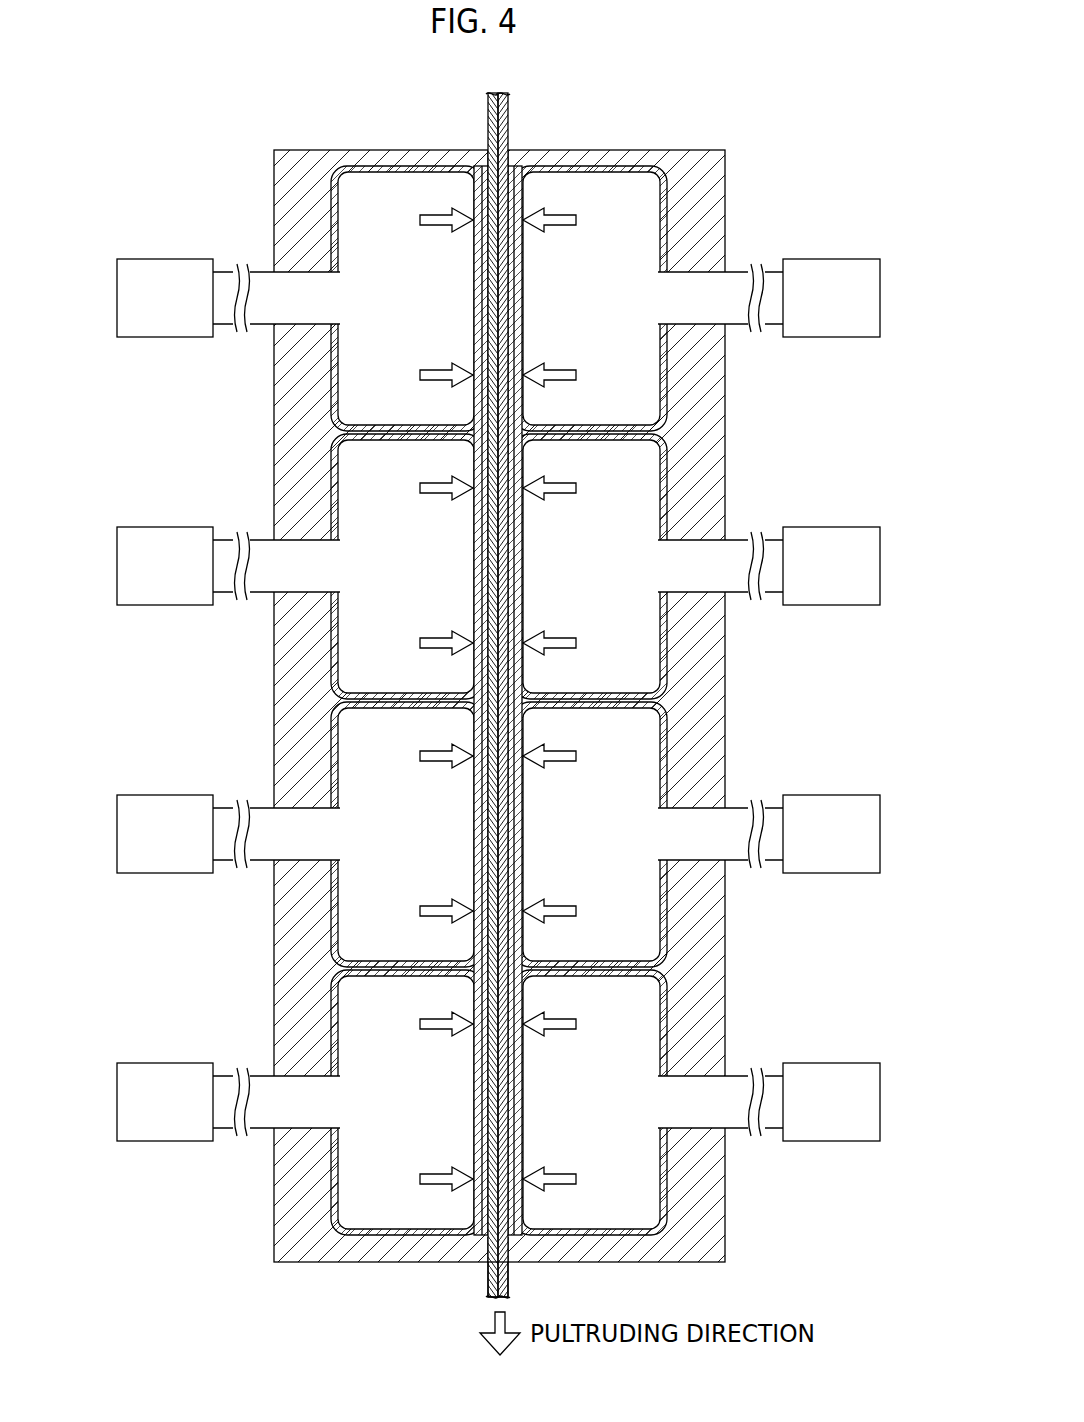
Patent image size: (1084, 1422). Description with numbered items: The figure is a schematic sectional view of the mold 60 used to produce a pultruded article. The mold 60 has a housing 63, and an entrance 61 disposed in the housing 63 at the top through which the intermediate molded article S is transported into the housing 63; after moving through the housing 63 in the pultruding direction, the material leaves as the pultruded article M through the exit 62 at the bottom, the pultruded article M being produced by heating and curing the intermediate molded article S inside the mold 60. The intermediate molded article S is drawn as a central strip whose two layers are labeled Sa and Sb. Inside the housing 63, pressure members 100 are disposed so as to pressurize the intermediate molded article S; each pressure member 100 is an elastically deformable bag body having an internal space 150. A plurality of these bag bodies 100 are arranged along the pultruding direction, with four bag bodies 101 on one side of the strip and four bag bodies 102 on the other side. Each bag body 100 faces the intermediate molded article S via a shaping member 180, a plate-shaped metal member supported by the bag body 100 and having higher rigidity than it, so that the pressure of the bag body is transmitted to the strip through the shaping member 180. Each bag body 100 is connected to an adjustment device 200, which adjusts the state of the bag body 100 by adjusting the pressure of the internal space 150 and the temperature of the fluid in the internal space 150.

The intermediate molded article S is at (502, 689).
The first sub-strip Sa is at (505, 599).
The second sub-strip Sb is at (492, 599).
The mold 60 is at (531, 693).
The entrance 61 is at (511, 146).
The exit 62 is at (485, 1268).
The housing 63 is at (722, 235).
The pressure member 100 is at (498, 691).
The bag body 101 is at (663, 187).
The bag body 102 is at (333, 201).
The internal space 150 is at (405, 317).
The shaping member 180 is at (478, 258).
The adjustment device 200 is at (141, 259).
The pultruded article M is at (511, 1272).